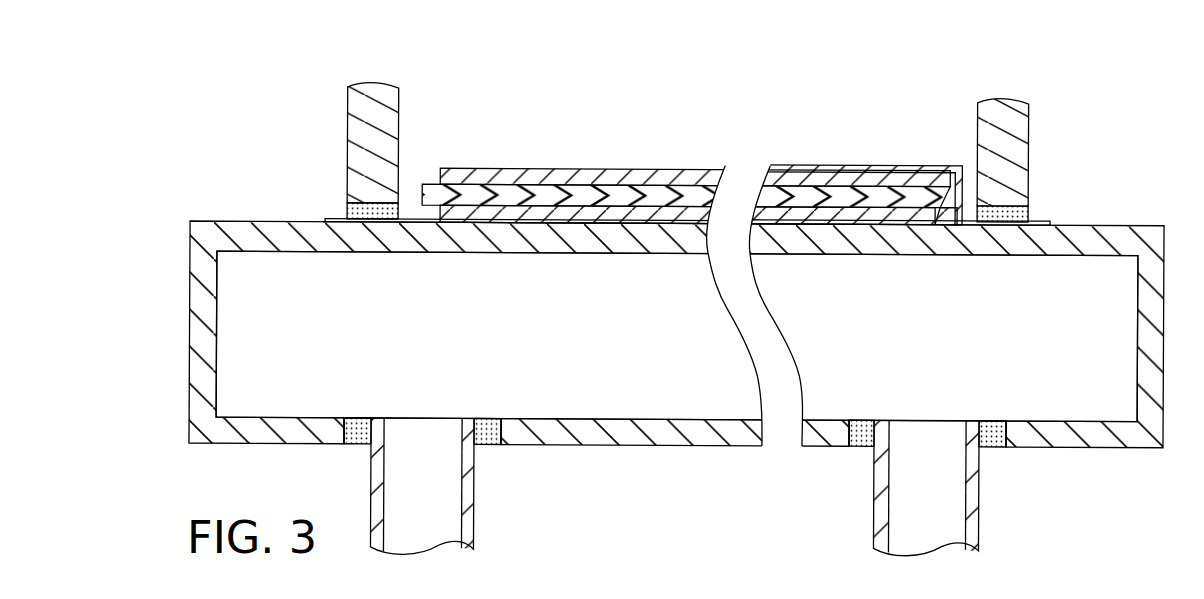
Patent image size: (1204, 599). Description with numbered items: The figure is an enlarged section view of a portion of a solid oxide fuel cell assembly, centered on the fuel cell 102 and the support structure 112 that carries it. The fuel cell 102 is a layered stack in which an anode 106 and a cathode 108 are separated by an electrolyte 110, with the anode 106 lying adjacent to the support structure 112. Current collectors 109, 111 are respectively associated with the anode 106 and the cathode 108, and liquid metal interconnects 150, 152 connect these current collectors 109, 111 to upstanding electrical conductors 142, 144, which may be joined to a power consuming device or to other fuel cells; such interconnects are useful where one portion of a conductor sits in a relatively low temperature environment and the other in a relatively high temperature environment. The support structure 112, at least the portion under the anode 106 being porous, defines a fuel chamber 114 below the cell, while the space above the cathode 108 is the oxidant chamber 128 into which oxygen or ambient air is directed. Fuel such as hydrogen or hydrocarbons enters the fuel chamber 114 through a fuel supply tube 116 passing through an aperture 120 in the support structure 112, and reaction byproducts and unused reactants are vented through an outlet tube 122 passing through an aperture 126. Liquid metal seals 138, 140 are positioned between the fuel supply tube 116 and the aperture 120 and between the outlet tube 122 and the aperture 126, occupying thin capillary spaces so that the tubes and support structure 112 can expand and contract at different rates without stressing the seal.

The fuel cell 102 is at (678, 103).
The anode 106 is at (626, 188).
The cathode 108 is at (480, 167).
The current collector 109 is at (385, 225).
The electrolyte 110 is at (670, 195).
The current collector 111 is at (1000, 225).
The support structure 112 is at (243, 220).
The fuel chamber 114 is at (661, 364).
The fuel supply tube 116 is at (477, 497).
The aperture 120 is at (509, 432).
The outlet tube 122 is at (980, 498).
The aperture 126 is at (1014, 433).
The oxidant chamber 128 is at (493, 99).
The liquid metal seal 138 is at (487, 417).
The liquid metal seal 140 is at (990, 417).
The electrical conductor 142 is at (372, 86).
The electrical conductor 144 is at (998, 100).
The liquid metal interconnect 150 is at (345, 210).
The liquid metal interconnect 152 is at (1028, 210).